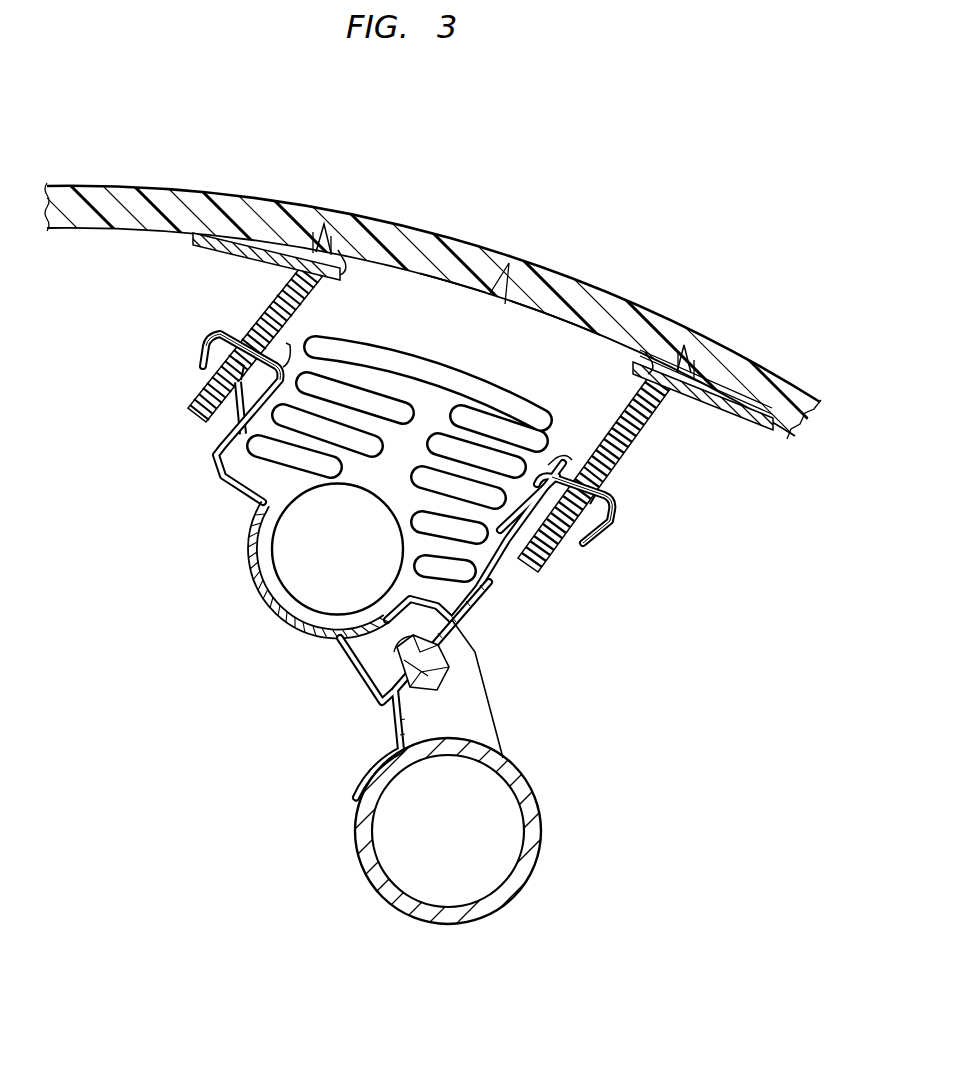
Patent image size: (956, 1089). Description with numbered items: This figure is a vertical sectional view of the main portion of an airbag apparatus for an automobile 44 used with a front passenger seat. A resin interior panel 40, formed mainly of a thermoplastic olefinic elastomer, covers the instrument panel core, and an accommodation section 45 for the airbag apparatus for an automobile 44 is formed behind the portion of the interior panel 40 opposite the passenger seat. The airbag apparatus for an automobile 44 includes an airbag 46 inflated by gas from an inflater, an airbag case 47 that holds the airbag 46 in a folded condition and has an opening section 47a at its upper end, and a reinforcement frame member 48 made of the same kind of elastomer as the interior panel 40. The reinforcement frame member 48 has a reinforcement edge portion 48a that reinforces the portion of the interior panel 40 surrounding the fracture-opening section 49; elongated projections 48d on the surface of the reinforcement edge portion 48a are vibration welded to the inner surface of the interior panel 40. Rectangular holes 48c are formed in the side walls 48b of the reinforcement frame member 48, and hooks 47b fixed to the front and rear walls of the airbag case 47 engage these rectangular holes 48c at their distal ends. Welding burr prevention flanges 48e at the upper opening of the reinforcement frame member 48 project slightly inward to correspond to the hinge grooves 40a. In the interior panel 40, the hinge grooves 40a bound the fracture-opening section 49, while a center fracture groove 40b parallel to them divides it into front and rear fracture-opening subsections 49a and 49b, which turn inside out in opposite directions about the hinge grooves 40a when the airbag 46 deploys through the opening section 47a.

The interior panel 40 is at (440, 282).
The hinge grooves 40a is at (317, 240).
The center fracture groove 40b is at (497, 267).
The airbag apparatus for an automobile 44 is at (618, 288).
The accommodation section 45 is at (243, 540).
The airbag 46 is at (487, 593).
The airbag case 47 is at (382, 485).
The opening section 47a is at (568, 455).
The hooks 47b is at (200, 363).
The reinforcement frame member 48 is at (466, 351).
The reinforcement edge portion 48a is at (230, 256).
The side walls 48b is at (193, 410).
The rectangular holes 48c is at (233, 364).
The elongated projections 48d is at (263, 233).
The welding burr prevention flanges 48e is at (332, 263).
The fracture-opening section 49 is at (516, 237).
The front fracture-opening subsection 49a is at (456, 238).
The rear fracture-opening subsection 49b is at (541, 268).